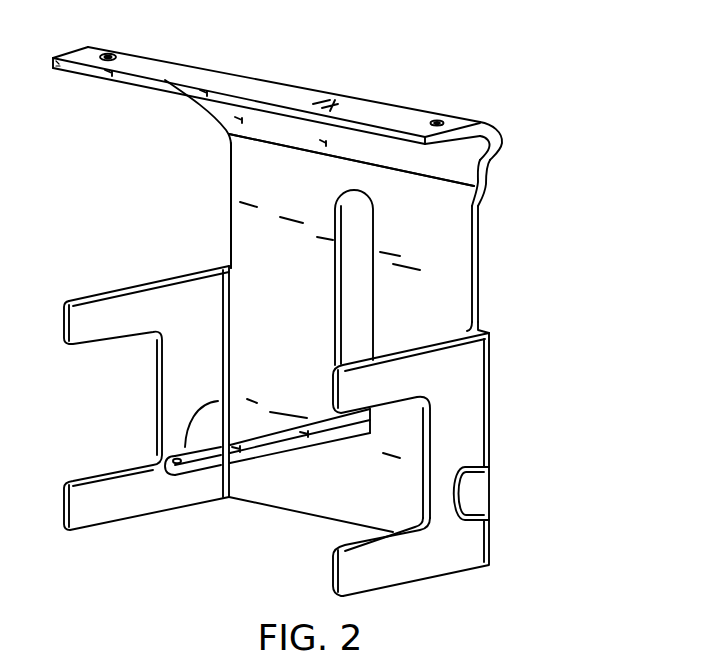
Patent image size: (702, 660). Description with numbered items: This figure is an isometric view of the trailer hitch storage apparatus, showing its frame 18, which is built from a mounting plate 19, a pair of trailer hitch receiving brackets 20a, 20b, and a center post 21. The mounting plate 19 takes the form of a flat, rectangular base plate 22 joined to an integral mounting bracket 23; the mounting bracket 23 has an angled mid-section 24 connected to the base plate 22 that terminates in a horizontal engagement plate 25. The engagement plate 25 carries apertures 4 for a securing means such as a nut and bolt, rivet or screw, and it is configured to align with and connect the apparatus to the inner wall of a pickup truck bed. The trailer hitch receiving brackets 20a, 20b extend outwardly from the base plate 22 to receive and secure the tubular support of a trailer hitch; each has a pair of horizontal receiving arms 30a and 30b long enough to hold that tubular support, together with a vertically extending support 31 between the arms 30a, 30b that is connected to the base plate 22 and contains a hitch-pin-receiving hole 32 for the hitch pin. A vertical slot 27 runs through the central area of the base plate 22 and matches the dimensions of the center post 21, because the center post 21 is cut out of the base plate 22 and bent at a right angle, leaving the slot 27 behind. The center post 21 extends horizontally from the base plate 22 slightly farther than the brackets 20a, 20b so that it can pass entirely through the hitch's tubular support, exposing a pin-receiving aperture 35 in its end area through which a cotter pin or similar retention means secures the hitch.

The mounting hole 4 is at (108, 54).
The frame 18 is at (494, 276).
The mounting plate 19 is at (476, 323).
The trailer hitch receiving bracket 20a is at (491, 397).
The trailer hitch receiving bracket 20b is at (149, 281).
The center post 21 is at (280, 440).
The base plate 22 is at (468, 201).
The mounting bracket 23 is at (498, 171).
The angled mid-section 24 is at (493, 128).
The horizontal engagement plate 25 is at (268, 93).
The vertical slot 27 is at (357, 213).
The horizontal receiving arm 30a is at (425, 360).
The horizontal receiving arm 30b is at (393, 570).
The vertically extending support 31 is at (460, 448).
The hitch-pin-receiving hole 32 is at (465, 484).
The pin-receiving aperture 35 is at (176, 457).